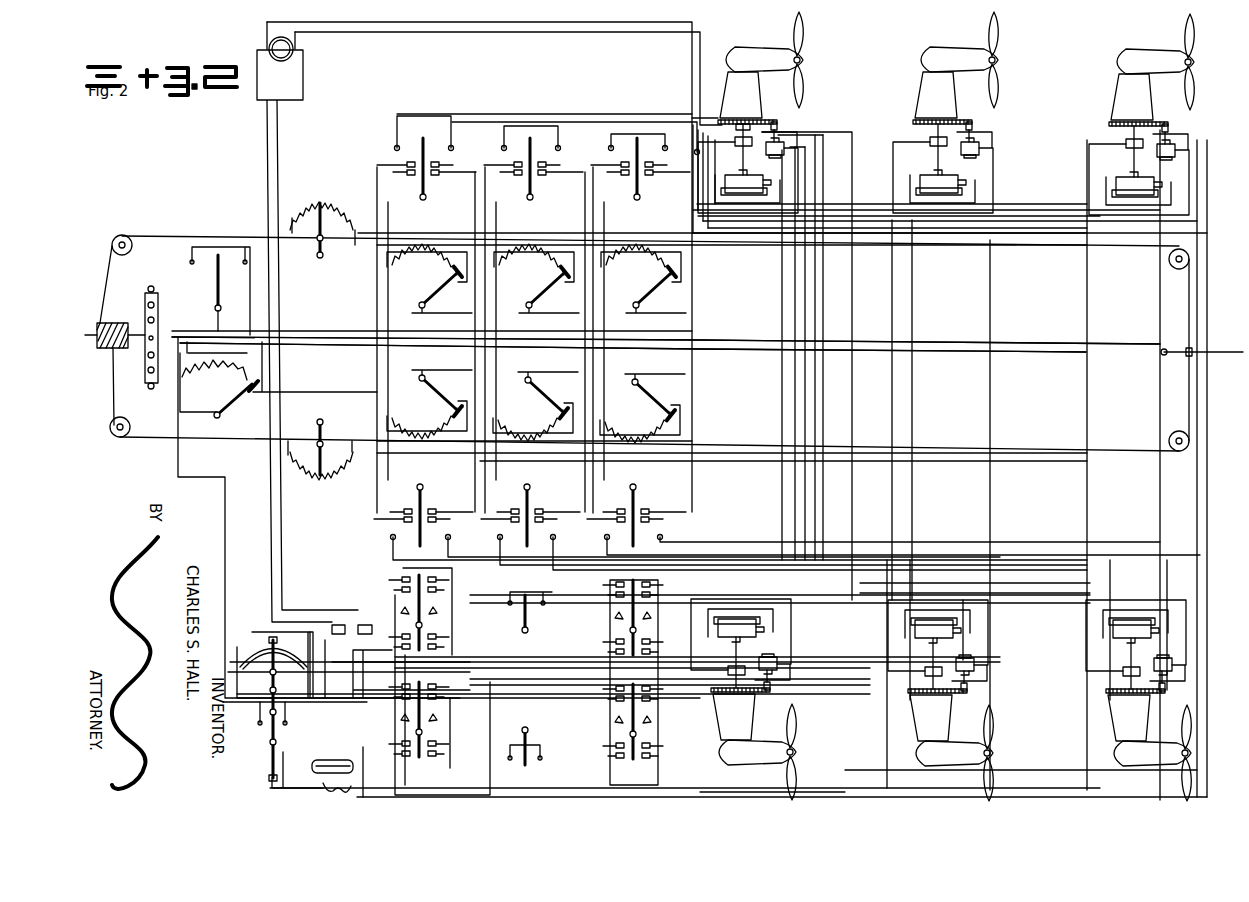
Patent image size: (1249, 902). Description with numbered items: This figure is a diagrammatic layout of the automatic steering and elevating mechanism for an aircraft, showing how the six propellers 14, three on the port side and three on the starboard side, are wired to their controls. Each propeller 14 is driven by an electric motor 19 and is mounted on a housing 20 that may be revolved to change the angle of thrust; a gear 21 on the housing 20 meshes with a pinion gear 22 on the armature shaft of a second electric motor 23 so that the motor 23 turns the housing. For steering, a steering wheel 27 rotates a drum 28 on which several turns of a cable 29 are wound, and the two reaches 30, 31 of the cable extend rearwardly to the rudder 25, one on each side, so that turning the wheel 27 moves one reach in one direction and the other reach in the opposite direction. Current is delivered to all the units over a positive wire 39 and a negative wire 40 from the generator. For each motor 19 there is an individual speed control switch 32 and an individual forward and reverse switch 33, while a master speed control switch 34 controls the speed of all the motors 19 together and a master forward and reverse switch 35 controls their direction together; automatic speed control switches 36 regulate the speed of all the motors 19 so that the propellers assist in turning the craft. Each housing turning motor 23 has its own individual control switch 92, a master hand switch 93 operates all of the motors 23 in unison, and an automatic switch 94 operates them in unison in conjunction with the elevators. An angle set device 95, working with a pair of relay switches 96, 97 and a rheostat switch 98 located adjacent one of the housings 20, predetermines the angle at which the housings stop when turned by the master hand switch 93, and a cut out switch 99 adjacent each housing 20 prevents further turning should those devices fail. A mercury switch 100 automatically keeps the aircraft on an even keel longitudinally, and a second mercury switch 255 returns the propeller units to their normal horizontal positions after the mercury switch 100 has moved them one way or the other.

The propeller 14 is at (800, 20).
The electric motor 19 is at (765, 182).
The housing 20 is at (745, 52).
The gear 21 is at (718, 120).
The pinion 22 is at (775, 125).
The electric motor 23 is at (778, 145).
The rudder 25 is at (1232, 356).
The steering wheel 27 is at (145, 296).
The drum 28 is at (98, 347).
The cable 29 is at (110, 383).
The reach 30 is at (158, 235).
The reach 31 is at (148, 441).
The speed control switch 32 is at (420, 295).
The forward and reverse switch 33 is at (423, 136).
The master speed control switch 34 is at (228, 412).
The master forward and reverse switch 35 is at (214, 289).
The automatic speed control switch 36 is at (325, 207).
The positive wire 39 is at (1044, 339).
The negative wire 40 is at (1036, 350).
The individual control switch 92 is at (432, 623).
The master hand switch 93 is at (268, 745).
The automatic switch 94 is at (265, 645).
The angle set device 95 is at (268, 46).
The relay switch 96 is at (340, 624).
The relay switch 97 is at (368, 625).
The rheostat switch 98 is at (740, 124).
The cut out switch 99 is at (748, 137).
The mercury switch 100 is at (338, 760).
The second mercury switch 255 is at (345, 790).